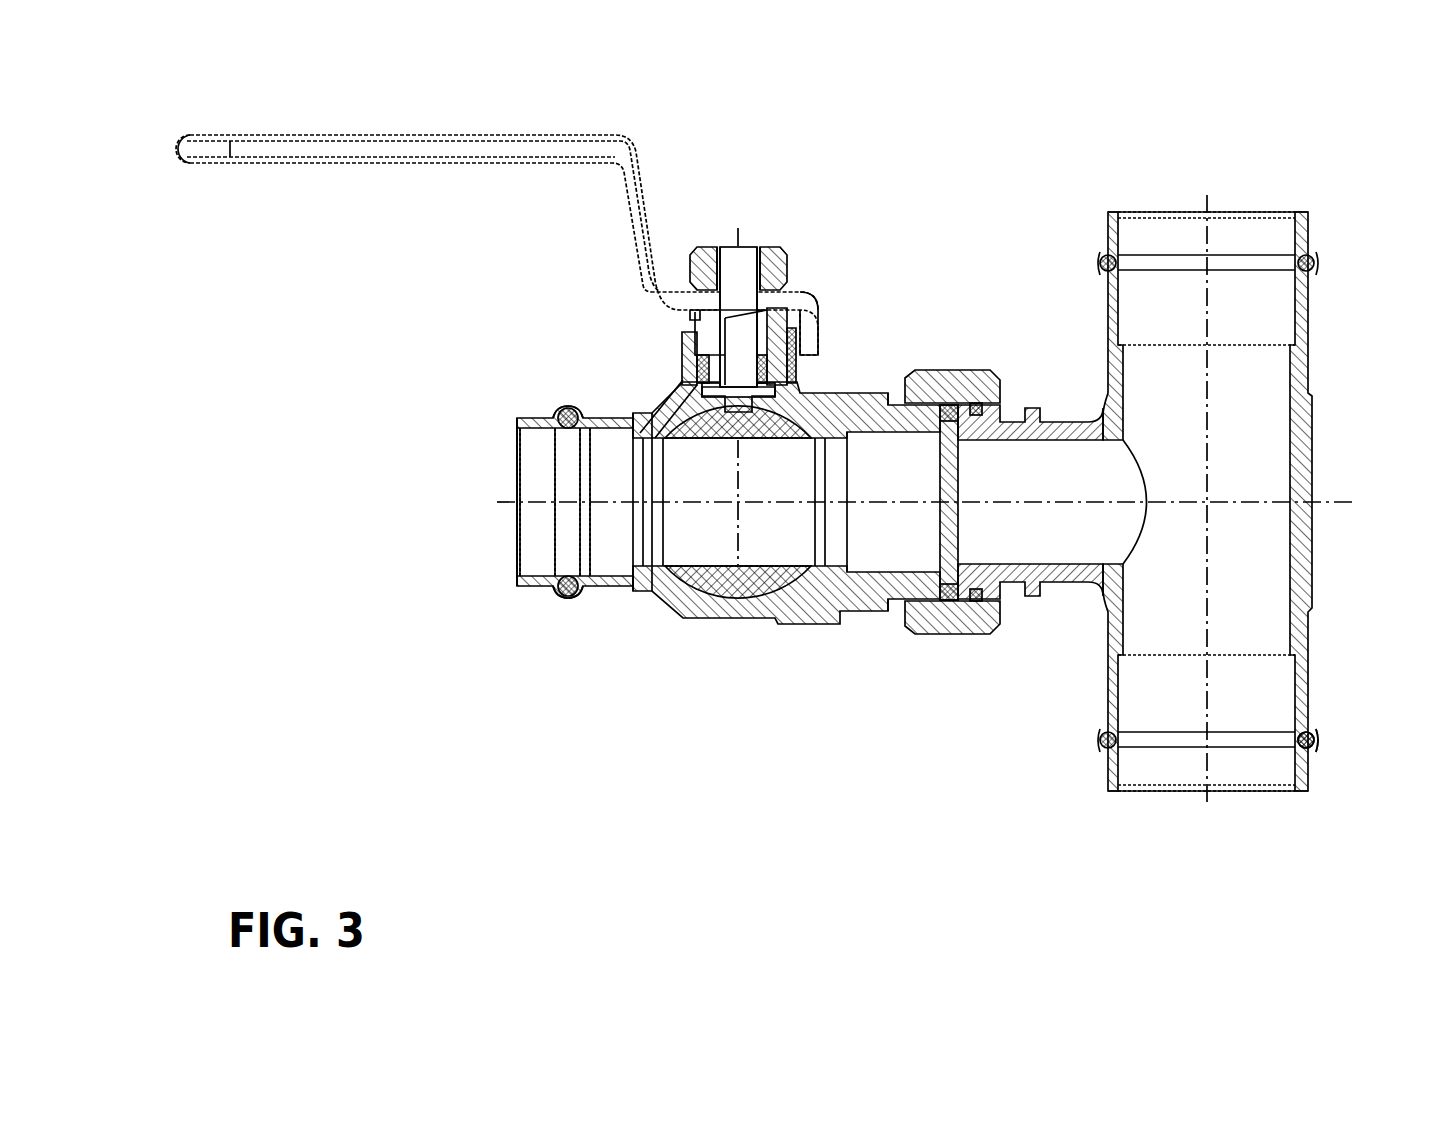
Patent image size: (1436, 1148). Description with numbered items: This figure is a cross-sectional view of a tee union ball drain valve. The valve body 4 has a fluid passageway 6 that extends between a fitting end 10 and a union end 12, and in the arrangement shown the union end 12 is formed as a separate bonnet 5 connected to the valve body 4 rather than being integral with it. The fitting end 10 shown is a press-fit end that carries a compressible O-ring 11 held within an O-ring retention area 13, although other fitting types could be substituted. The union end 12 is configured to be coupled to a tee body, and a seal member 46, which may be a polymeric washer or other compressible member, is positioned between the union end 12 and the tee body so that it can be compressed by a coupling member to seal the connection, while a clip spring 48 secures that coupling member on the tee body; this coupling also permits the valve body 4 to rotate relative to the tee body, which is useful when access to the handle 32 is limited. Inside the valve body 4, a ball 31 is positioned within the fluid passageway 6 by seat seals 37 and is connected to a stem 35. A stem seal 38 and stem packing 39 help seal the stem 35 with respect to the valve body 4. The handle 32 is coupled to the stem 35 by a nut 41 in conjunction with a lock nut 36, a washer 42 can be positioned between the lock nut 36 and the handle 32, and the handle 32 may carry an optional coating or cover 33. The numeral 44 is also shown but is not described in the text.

The valve body 4 is at (673, 610).
The bonnet 5 is at (850, 595).
The fluid passageway 6 is at (510, 530).
The fitting end 10 is at (540, 585).
The O-ring 11 is at (558, 407).
The union end 12 is at (898, 600).
The O-ring retention area 13 is at (568, 408).
The ball 31 is at (717, 580).
The handle 32 is at (443, 145).
The coating or cover 33 is at (307, 135).
The stem 35 is at (731, 370).
The lock nut 36 is at (702, 245).
The seat seals 37 is at (650, 592).
The stem seal 38 is at (782, 375).
The stem packing 39 is at (790, 340).
The nut 41 is at (784, 310).
The washer 42 is at (790, 280).
The gasket 44 is at (953, 630).
The seal member 46 is at (975, 368).
The clip spring 48 is at (990, 620).